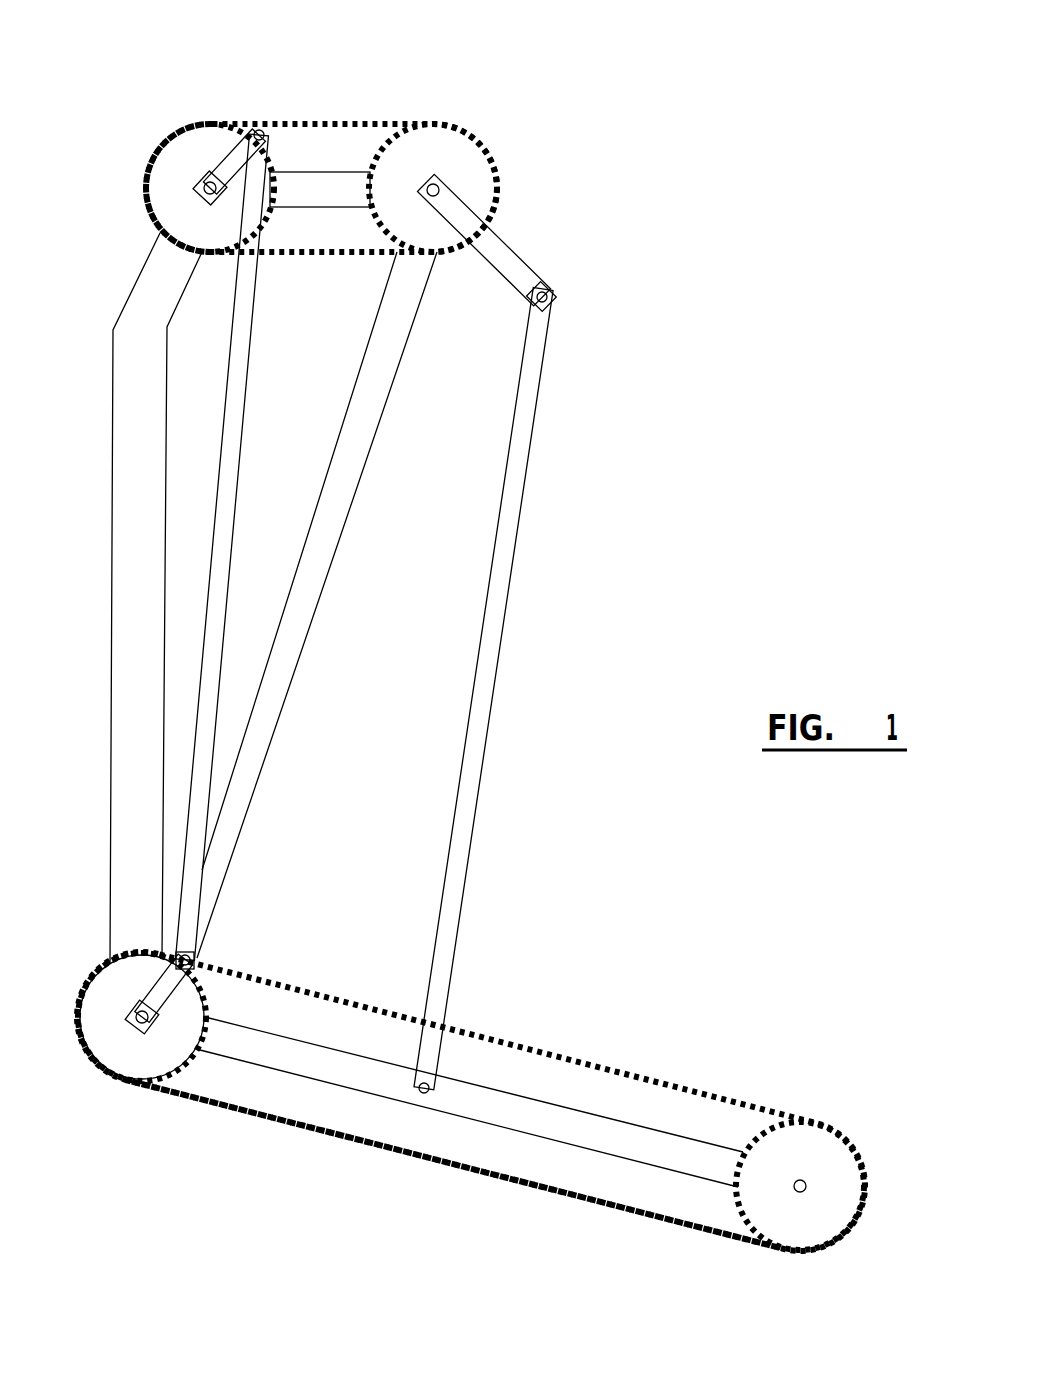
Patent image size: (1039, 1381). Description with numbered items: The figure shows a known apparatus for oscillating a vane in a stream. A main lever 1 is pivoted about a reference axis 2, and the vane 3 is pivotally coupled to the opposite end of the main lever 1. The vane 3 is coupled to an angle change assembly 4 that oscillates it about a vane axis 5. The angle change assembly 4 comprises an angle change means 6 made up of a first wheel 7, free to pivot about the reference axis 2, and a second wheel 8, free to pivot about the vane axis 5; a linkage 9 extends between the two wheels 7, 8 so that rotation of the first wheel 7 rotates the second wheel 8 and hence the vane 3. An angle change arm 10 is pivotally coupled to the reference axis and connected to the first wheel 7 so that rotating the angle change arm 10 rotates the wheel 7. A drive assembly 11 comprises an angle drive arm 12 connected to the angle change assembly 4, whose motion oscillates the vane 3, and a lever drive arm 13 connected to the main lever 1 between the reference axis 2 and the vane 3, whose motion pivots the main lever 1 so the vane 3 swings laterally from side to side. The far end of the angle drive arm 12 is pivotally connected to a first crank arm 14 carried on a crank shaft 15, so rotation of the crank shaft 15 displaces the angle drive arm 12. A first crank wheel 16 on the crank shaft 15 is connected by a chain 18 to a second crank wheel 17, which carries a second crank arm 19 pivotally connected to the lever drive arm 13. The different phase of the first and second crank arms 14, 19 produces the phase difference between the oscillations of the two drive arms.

The main lever 1 is at (575, 1127).
The reference axis 2 is at (147, 1030).
The vane 3 is at (755, 1237).
The angle change assembly 4 is at (84, 975).
The vane axis 5 is at (806, 1180).
The angle change means 6 is at (118, 1034).
The first wheel 7 is at (137, 975).
The second wheel 8 is at (793, 1153).
The linkage 9 is at (382, 1148).
The angle change arm 10 is at (168, 982).
The drive assembly 11 is at (557, 258).
The angle drive arm 12 is at (230, 490).
The lever drive arm 13 is at (493, 632).
The first crank arm 14 is at (233, 165).
The crank shaft 15 is at (205, 182).
The first crank wheel 16 is at (173, 190).
The second crank wheel 17 is at (438, 158).
The chain 18 is at (338, 120).
The second crank arm 19 is at (500, 258).